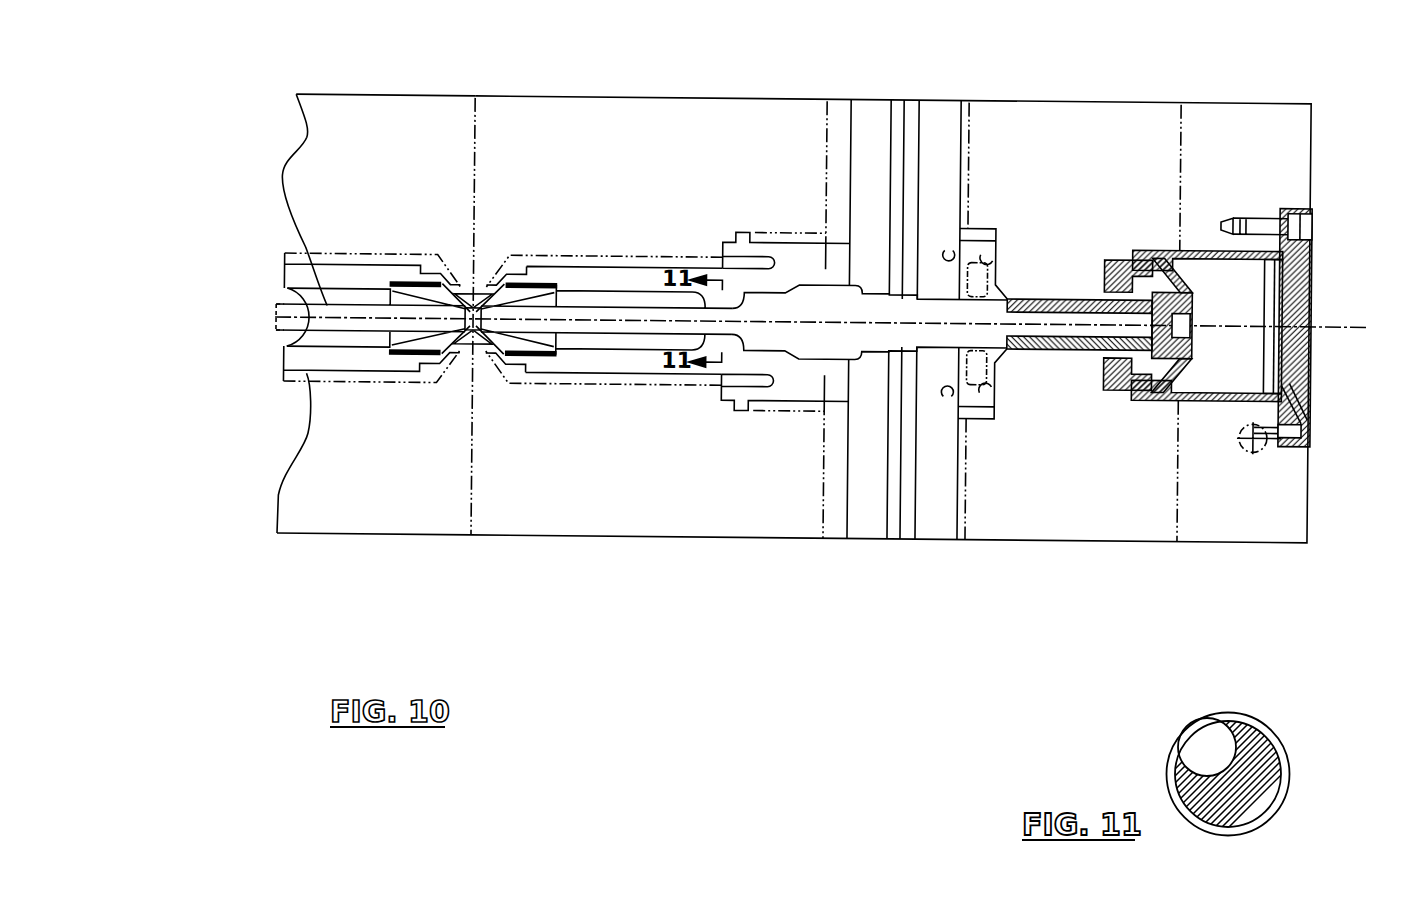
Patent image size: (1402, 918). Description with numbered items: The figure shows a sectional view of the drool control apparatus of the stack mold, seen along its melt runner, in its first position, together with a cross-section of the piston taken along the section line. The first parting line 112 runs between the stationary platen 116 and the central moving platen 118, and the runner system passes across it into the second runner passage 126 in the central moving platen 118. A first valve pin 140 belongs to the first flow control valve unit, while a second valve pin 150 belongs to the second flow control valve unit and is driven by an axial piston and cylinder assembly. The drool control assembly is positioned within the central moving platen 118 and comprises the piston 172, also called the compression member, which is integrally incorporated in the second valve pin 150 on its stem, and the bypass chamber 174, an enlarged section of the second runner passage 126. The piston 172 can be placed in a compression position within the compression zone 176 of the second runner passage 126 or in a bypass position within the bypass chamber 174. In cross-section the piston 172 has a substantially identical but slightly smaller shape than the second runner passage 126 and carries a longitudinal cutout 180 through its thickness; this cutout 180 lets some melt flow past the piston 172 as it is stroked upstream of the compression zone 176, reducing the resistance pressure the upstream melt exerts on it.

In FIG. 10, the first parting line 112 is at (473, 94).
In FIG. 10, the stationary platen 116 is at (343, 117).
In FIG. 10, the central moving platen 118 is at (613, 108).
In FIG. 10, the first valve pin 140 is at (305, 253).
In FIG. 10, the second valve pin 150 is at (610, 302).
In FIG. 10, the piston 172 is at (723, 334).
In FIG. 11, the piston 172 is at (1267, 728).
In FIG. 10, the bypass chamber 174 is at (761, 346).
In FIG. 10, the compression zone 176 is at (823, 351).
In FIG. 11, the compression zone 176 is at (1290, 785).
In FIG. 11, the longitudinal cutout 180 is at (1237, 720).
In FIG. 11, the second runner passage 126 is at (1220, 838).